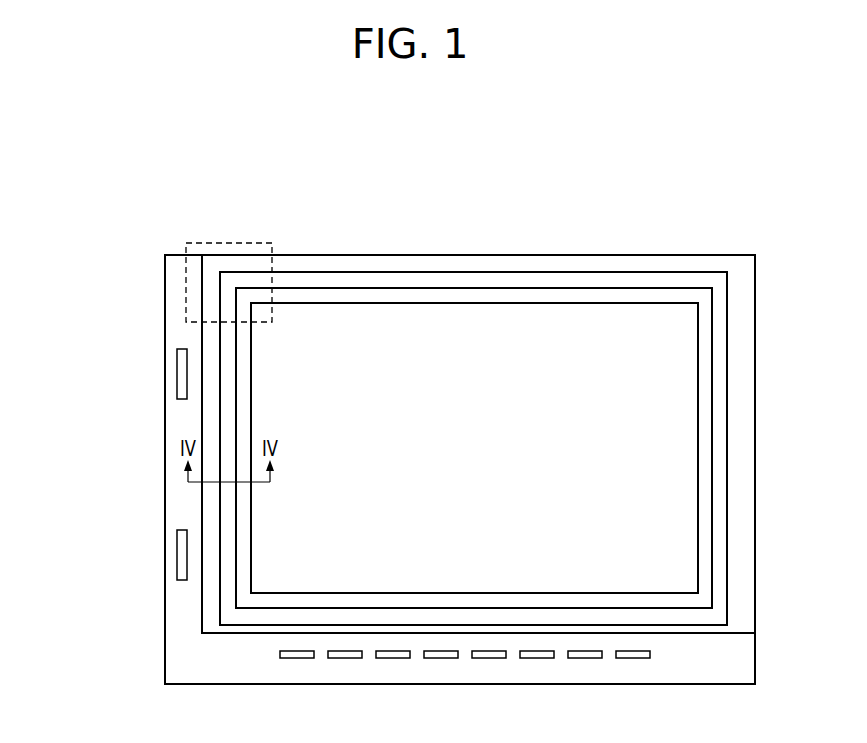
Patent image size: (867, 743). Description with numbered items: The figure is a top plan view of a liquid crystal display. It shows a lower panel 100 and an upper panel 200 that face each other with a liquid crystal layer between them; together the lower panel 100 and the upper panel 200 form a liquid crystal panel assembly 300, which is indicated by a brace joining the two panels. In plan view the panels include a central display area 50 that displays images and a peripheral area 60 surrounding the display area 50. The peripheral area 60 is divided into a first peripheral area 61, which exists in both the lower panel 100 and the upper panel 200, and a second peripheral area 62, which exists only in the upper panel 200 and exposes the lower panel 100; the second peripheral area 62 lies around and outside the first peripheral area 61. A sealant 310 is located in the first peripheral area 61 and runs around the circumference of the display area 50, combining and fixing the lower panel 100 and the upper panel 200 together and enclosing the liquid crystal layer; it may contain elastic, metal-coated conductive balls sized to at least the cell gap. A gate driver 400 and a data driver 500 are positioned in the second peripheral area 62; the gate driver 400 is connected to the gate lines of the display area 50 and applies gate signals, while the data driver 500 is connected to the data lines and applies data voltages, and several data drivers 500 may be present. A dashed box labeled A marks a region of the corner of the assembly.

The display area 50 is at (452, 328).
The peripheral area 60 is at (543, 193).
The first peripheral area 61 is at (551, 263).
The second peripheral area 62 is at (673, 648).
The lower panel 100 is at (166, 484).
The upper panel 200 is at (202, 417).
The liquid crystal panel assembly 300 is at (87, 410).
The sealant 310 is at (335, 288).
The gate driver 400 is at (177, 553).
The data driver 500 is at (632, 660).
The enlarged region A is at (219, 243).